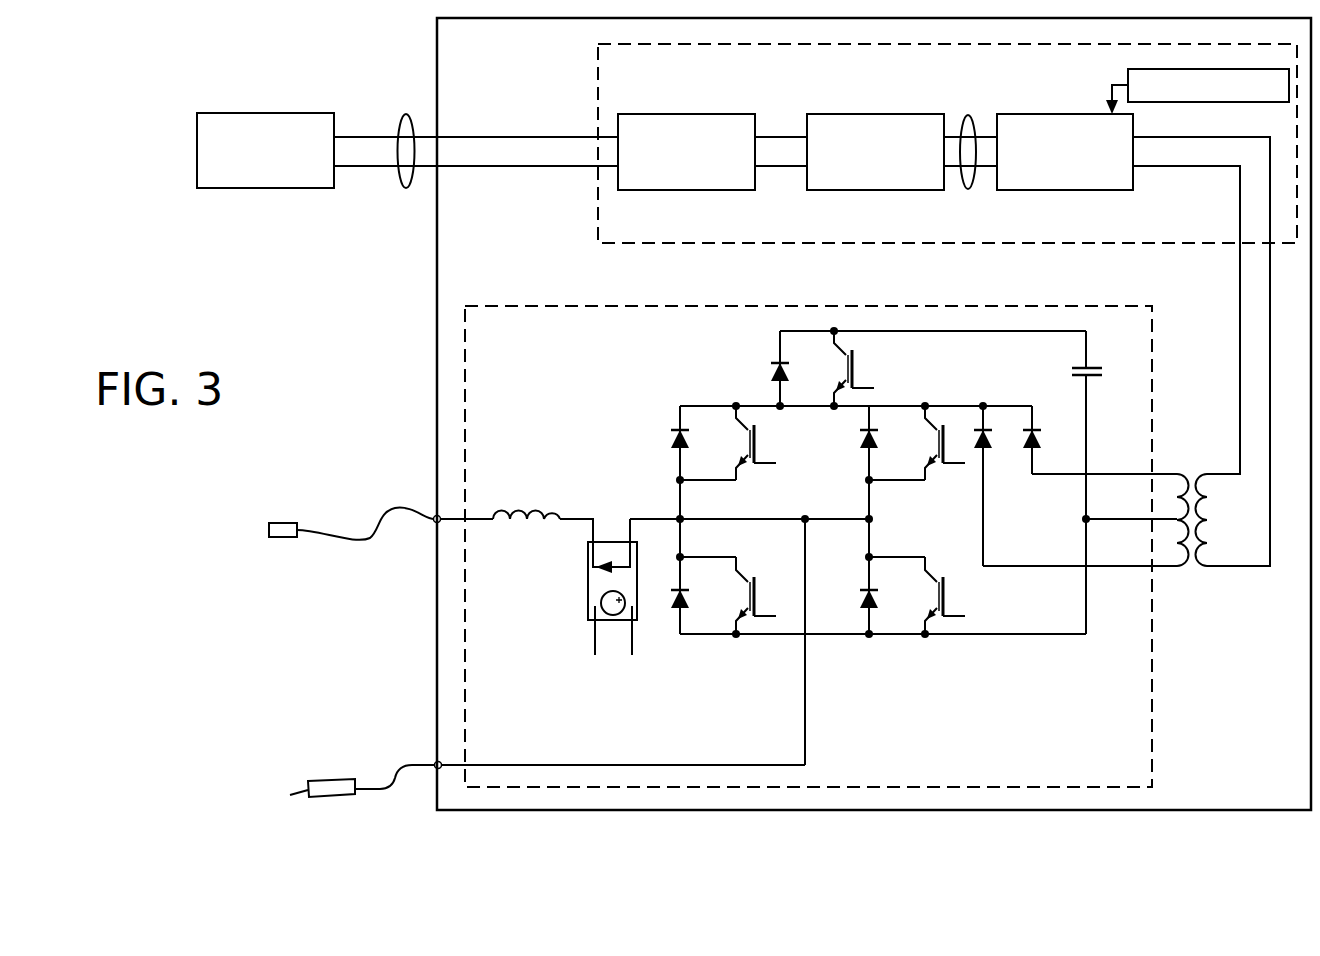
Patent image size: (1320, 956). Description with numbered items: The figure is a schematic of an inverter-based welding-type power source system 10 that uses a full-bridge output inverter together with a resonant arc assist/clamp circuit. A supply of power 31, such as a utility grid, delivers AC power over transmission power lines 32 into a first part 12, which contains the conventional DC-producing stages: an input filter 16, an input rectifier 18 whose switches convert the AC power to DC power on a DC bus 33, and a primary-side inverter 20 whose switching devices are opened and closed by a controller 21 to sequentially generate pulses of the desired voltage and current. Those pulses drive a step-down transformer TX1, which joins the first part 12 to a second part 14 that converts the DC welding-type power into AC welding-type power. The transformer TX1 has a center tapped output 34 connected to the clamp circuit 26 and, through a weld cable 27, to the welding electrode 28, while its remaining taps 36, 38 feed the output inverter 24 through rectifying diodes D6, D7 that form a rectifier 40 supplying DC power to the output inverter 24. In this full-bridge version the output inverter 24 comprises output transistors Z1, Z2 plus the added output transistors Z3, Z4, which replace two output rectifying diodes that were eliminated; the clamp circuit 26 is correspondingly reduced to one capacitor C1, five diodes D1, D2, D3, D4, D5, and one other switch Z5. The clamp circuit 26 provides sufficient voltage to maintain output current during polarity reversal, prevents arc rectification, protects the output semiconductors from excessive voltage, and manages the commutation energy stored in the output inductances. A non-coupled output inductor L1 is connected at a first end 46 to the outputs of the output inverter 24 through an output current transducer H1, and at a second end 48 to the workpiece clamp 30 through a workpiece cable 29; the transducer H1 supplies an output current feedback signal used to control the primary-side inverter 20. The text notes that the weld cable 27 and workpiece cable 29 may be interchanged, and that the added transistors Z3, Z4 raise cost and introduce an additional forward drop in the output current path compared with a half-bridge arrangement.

The welding-type power source system 10 is at (436, 290).
The first part 12 is at (985, 243).
The second part 14 is at (1152, 655).
The input filter 16 is at (687, 114).
The input rectifier 18 is at (877, 114).
The primary-side inverter 20 is at (1035, 114).
The controller 21 is at (1240, 102).
The output inverter 24 is at (852, 660).
The clamp circuit 26 is at (890, 514).
The weld cable 27 is at (410, 765).
The welding electrode 28 is at (335, 797).
The workpiece cable 29 is at (372, 541).
The workpiece clamp 30 is at (283, 523).
The supply of power 31 is at (268, 113).
The transmission power lines 32 is at (406, 190).
The DC bus 33 is at (967, 114).
The center tapped output 34 is at (1102, 519).
The transformer tap 36 is at (1102, 474).
The transformer tap 38 is at (1038, 566).
The rectifier 40 is at (953, 499).
The first end of output inductor 46 is at (586, 519).
The second end of output inductor 48 is at (483, 519).
The non-coupled output inductor L1 is at (538, 519).
The output current transducer H1 is at (591, 576).
The capacitor C1 is at (1089, 363).
The transformer TX1 is at (1105, 489).
The clamp diode D1 is at (862, 439).
The clamp diode D2 is at (862, 599).
The clamp diode D3 is at (673, 439).
The clamp diode D4 is at (673, 599).
The clamp diode D5 is at (773, 372).
The rectifying diode D6 is at (1041, 443).
The rectifying diode D7 is at (992, 446).
The switch (IGBT) Z1 is at (946, 443).
The switch (IGBT) Z2 is at (946, 595).
The output transistor Z3 is at (757, 443).
The output transistor Z4 is at (757, 595).
The switch Z5 is at (855, 368).